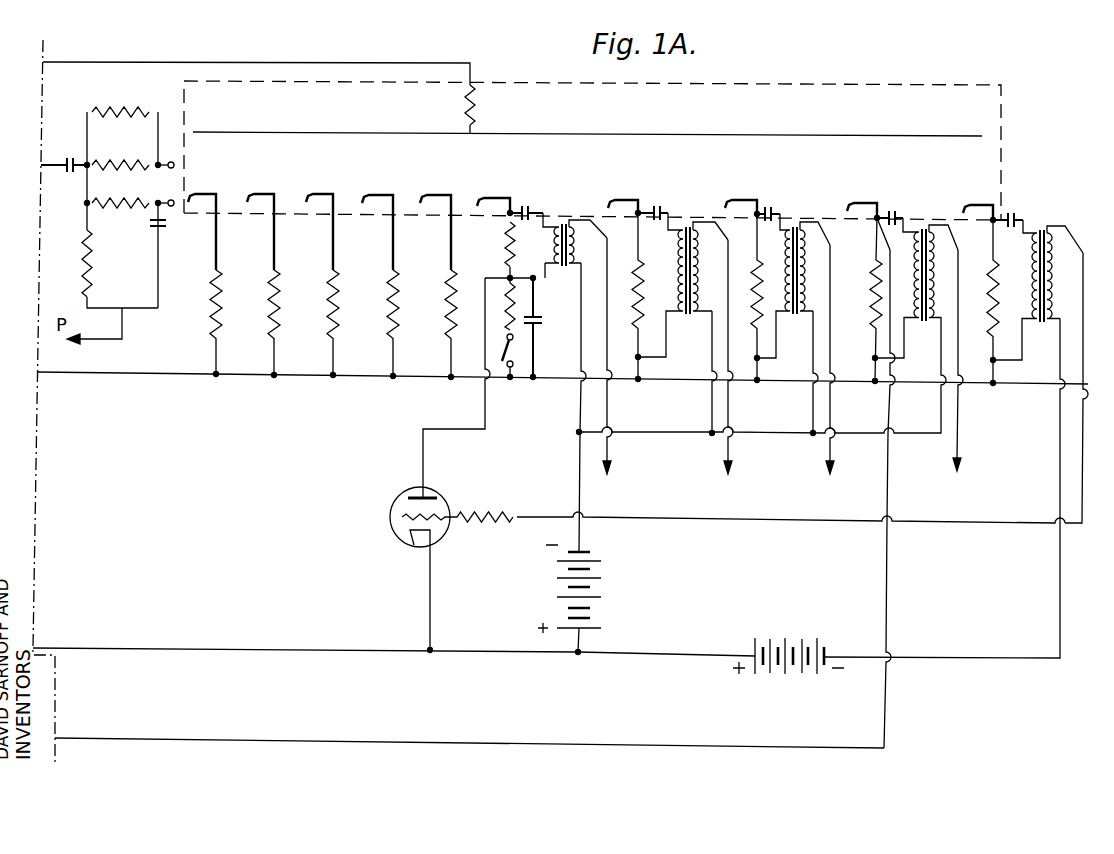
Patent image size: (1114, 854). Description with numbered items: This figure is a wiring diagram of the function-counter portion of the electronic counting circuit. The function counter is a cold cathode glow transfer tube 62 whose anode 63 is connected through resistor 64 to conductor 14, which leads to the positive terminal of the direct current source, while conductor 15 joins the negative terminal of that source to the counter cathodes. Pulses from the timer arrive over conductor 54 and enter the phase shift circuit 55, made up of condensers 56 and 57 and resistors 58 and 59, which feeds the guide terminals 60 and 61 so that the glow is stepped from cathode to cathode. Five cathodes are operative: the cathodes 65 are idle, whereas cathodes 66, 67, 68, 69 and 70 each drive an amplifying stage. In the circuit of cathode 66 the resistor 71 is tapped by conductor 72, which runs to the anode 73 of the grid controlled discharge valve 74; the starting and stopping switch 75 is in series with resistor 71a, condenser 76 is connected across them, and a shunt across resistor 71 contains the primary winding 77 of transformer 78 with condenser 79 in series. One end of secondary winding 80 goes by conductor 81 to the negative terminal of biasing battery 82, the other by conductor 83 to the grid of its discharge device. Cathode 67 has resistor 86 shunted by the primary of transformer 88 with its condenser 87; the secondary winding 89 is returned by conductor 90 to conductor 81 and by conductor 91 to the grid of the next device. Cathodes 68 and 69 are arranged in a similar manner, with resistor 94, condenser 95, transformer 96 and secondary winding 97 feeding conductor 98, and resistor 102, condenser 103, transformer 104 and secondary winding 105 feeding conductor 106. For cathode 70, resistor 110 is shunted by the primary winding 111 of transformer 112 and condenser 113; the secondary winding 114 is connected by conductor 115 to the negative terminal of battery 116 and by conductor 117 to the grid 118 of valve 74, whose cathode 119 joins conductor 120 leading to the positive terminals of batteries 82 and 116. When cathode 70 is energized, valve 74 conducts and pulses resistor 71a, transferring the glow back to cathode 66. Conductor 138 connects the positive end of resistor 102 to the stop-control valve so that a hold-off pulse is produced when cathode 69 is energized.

The conductor 14 is at (305, 66).
The conductor 15 is at (139, 374).
The conductor 54 is at (58, 160).
The phase shift circuit 55 is at (110, 182).
The condenser 56 is at (80, 178).
The condenser 57 is at (168, 223).
The resistor 58 is at (114, 120).
The resistor 59 is at (96, 238).
The guide terminal 60 is at (175, 200).
The guide terminal 61 is at (174, 161).
The cold cathode glow transfer tube 62 is at (755, 82).
The anode 63 is at (650, 131).
The resistor 64 is at (478, 110).
The cathodes 65 is at (330, 193).
The cathode 66 is at (492, 192).
The cathode 67 is at (627, 196).
The cathode 68 is at (746, 196).
The cathode 69 is at (862, 200).
The cathode 70 is at (979, 203).
The resistor 71 is at (504, 238).
The resistor 71a is at (500, 300).
The conductor 72 is at (484, 401).
The anode 73 is at (415, 493).
The grid controlled electric discharge valve 74 is at (391, 515).
The electric switch 75 is at (513, 350).
The condenser 76 is at (544, 322).
The primary winding 77 is at (551, 265).
The transformer 78 is at (565, 226).
The condenser 79 is at (526, 207).
The secondary winding 80 is at (582, 240).
The conductor 81 is at (576, 467).
The direct current battery 82 is at (560, 590).
The conductor 83 is at (611, 459).
The resistor 86 is at (634, 316).
The condenser 87 is at (660, 206).
The transformer 88 is at (689, 224).
The secondary winding 89 is at (704, 250).
The conductor 90 is at (710, 408).
The conductor 91 is at (732, 458).
The resistor 94 is at (760, 320).
The condenser 95 is at (772, 207).
The transformer 96 is at (800, 223).
The secondary winding 97 is at (810, 262).
The conductor 98 is at (835, 460).
The resistor 102 is at (880, 316).
The condenser 103 is at (900, 211).
The transformer 104 is at (928, 226).
The secondary winding 105 is at (938, 262).
The conductor 106 is at (963, 455).
The resistor 110 is at (998, 328).
The primary winding 111 is at (1027, 265).
The transformer 112 is at (1046, 227).
The condenser 113 is at (1012, 212).
The secondary winding 114 is at (1058, 296).
The conductor 115 is at (996, 657).
The direct current battery 116 is at (792, 650).
The conductor 117 is at (1080, 427).
The grid 118 is at (435, 512).
The cathode 119 is at (413, 546).
The conductor 120 is at (272, 648).
The conductor 138 is at (530, 740).